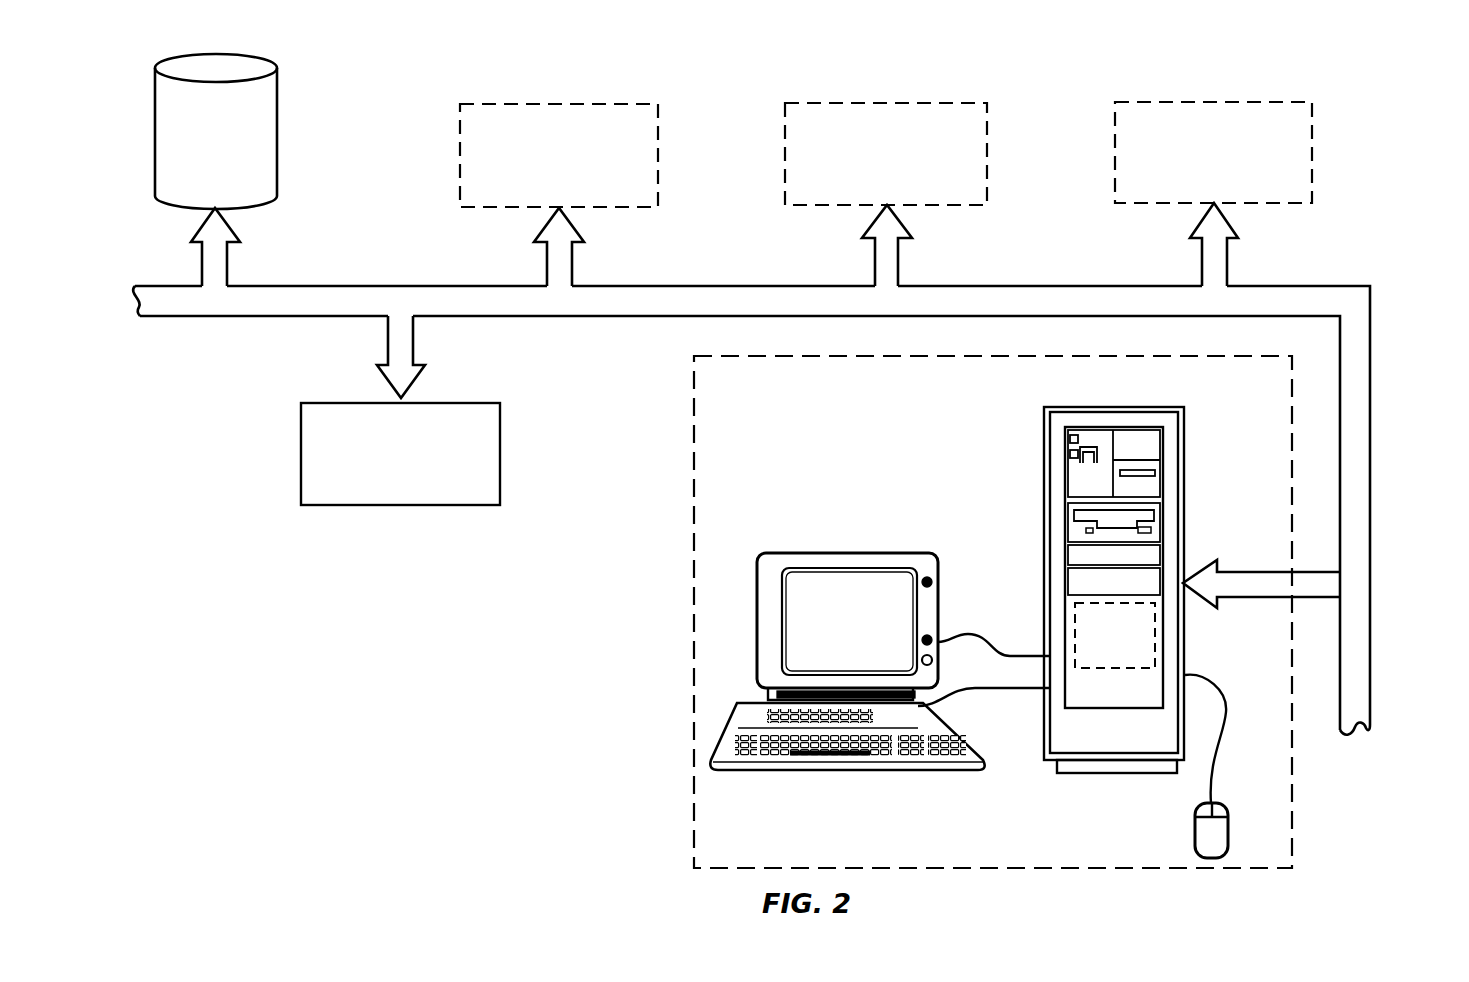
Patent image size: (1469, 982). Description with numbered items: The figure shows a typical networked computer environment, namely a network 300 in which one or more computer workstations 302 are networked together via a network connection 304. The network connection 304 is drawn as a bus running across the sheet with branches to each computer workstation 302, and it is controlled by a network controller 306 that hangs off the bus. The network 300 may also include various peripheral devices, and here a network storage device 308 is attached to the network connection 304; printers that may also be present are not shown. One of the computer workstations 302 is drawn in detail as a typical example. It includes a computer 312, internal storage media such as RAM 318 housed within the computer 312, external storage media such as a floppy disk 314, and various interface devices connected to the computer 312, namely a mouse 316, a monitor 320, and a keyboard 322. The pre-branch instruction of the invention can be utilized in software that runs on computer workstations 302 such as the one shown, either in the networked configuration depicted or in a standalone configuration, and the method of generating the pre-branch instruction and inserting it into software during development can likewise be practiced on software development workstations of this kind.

The network 300 is at (356, 743).
The computer workstation 302 is at (651, 201).
The network connection 304 is at (1372, 560).
The network controller 306 is at (498, 497).
The network storage device 308 is at (277, 100).
The computer 312 is at (1185, 663).
The floppy disk 314 is at (1155, 503).
The mouse 316 is at (1195, 813).
The RAM 318 is at (1075, 623).
The monitor 320 is at (848, 553).
The keyboard 322 is at (845, 772).